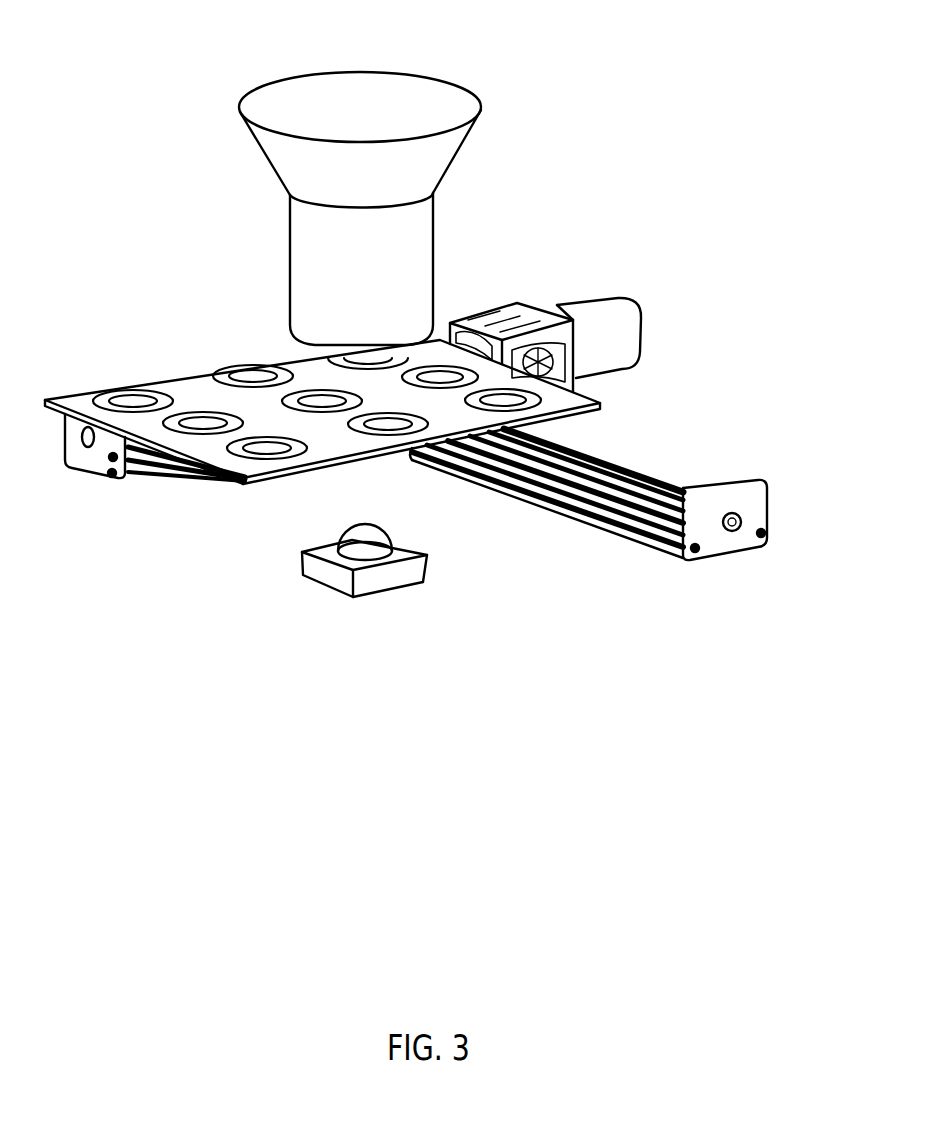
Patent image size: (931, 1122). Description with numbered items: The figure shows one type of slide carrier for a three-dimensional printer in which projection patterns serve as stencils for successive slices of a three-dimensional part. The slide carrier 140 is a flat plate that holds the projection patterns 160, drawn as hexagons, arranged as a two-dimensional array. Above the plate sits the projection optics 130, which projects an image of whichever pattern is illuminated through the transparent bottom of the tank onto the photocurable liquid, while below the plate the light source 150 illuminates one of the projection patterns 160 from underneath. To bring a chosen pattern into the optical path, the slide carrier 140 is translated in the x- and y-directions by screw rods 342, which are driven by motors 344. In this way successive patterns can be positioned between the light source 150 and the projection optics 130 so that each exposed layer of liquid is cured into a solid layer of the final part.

The projection optics 130 is at (480, 108).
The slide carrier 140 is at (600, 401).
The light source 150 is at (380, 572).
The projection patterns 160 is at (238, 364).
The screw rods 342 is at (700, 533).
The motors 344 is at (622, 322).